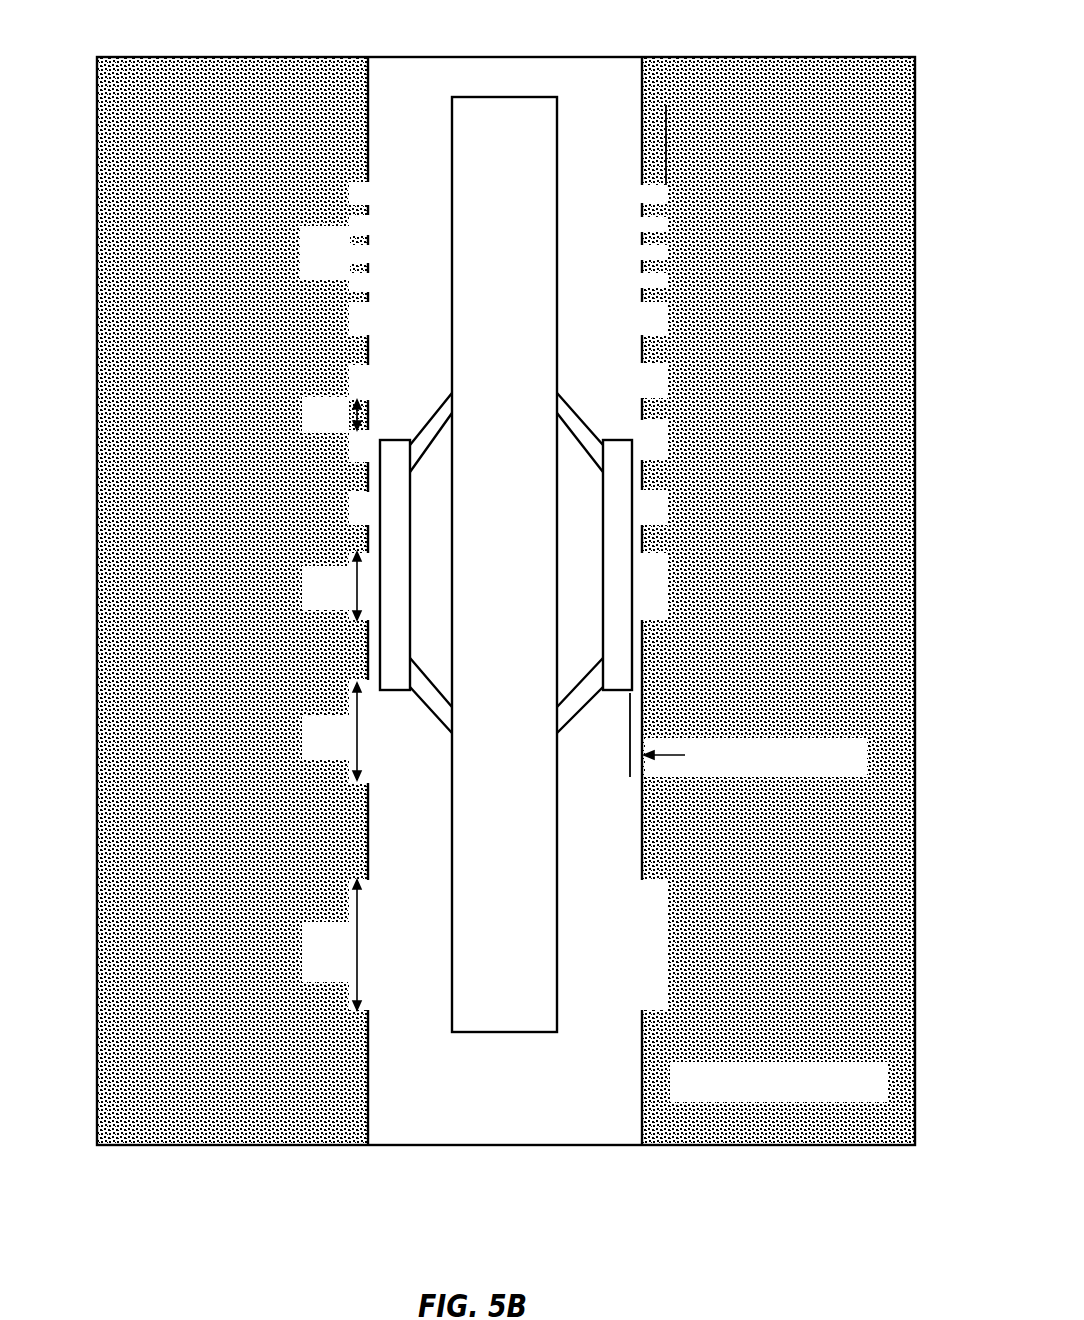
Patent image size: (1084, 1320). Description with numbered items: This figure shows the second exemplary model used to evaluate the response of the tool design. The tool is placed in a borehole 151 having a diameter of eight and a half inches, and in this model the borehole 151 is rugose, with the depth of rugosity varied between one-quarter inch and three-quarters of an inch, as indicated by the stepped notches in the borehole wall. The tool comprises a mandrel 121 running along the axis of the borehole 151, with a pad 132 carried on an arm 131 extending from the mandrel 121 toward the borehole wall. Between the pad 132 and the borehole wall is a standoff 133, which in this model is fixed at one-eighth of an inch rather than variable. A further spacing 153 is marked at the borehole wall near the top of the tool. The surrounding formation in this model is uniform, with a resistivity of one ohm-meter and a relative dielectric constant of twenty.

The mandrel 121 is at (503, 96).
The arm 131 is at (575, 415).
The pad 132 is at (617, 610).
The standoff 133 is at (629, 757).
The borehole 151 is at (505, 1146).
The gap 153 is at (672, 166).